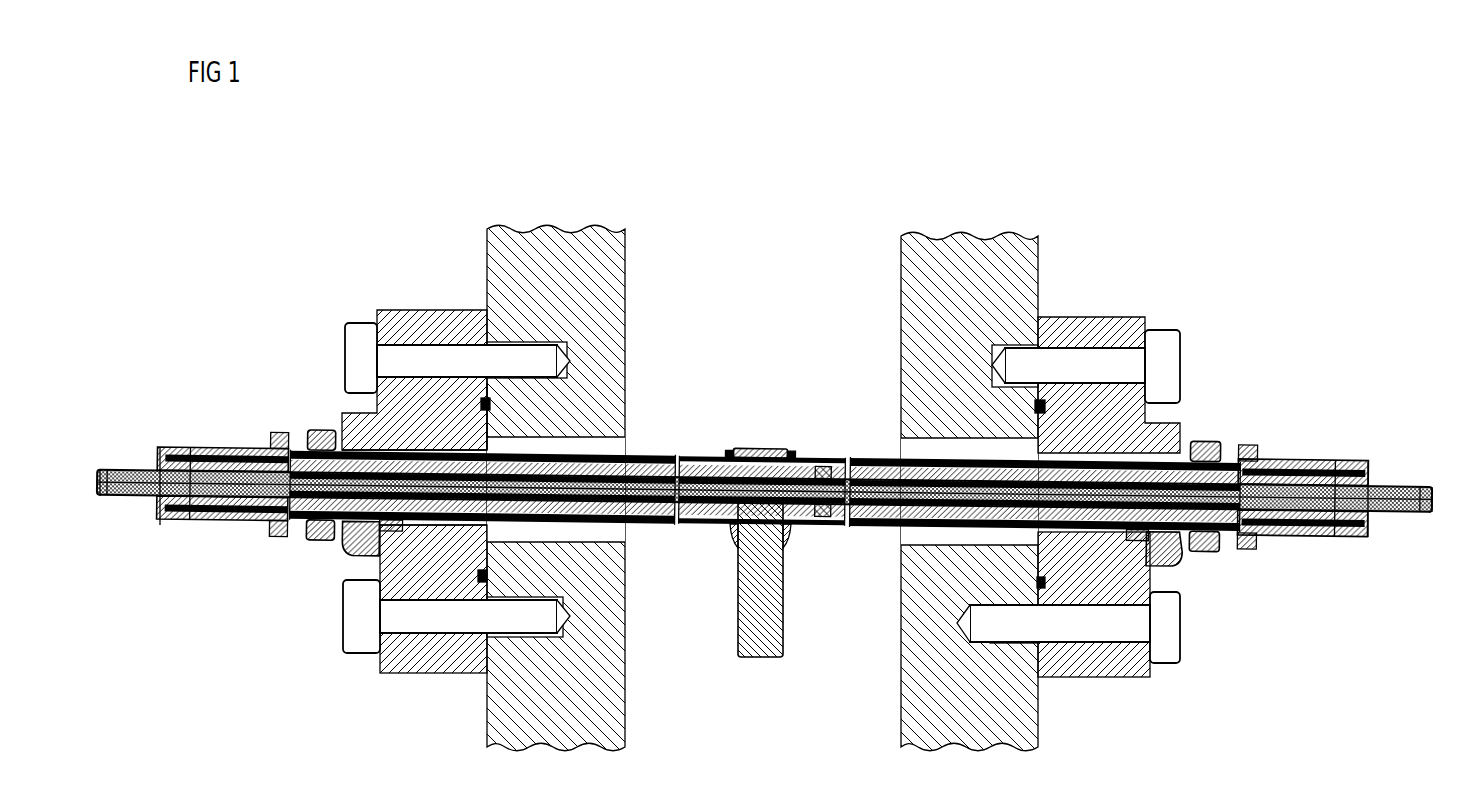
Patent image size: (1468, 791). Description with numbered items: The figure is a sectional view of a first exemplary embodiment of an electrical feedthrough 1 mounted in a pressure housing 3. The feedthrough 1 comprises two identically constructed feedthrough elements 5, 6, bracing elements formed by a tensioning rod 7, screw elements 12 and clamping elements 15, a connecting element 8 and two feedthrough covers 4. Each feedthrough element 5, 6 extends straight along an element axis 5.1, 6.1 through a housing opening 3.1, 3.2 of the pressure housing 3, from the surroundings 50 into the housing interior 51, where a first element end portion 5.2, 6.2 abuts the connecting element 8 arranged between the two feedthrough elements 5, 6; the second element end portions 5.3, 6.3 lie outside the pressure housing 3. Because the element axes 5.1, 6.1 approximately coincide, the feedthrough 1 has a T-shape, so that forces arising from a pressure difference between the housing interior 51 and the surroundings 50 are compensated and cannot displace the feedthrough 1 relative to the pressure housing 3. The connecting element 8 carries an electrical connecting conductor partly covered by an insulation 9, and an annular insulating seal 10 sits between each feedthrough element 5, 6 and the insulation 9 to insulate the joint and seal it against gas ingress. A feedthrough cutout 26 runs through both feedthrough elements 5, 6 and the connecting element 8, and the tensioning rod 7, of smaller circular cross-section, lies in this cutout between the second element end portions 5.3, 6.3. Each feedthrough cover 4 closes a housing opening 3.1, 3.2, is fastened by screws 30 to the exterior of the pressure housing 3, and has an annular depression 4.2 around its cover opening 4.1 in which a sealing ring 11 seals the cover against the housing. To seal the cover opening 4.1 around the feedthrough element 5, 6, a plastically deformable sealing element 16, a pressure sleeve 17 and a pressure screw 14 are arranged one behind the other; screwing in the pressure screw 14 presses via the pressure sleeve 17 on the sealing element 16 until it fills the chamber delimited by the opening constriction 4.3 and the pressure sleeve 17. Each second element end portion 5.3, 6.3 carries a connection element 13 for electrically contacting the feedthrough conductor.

The electrical feedthrough 1 is at (690, 258).
The pressure housing 3 is at (762, 459).
The housing opening 3.1 is at (630, 450).
The housing opening 3.2 is at (900, 452).
The feedthrough cover 4 is at (761, 458).
The cover opening 4.1 is at (518, 450).
The annular depression 4.2 is at (485, 408).
The opening constriction 4.3 is at (423, 522).
The feedthrough element 5 is at (630, 520).
The element axis 5.1 is at (106, 478).
The first element end portion 5.2 is at (728, 533).
The second element end portion 5.3 is at (168, 528).
The feedthrough element 6 is at (883, 525).
The element axis 6.1 is at (1448, 497).
The first element end portion 6.2 is at (796, 533).
The second element end portion 6.3 is at (1362, 545).
The tensioning rod 7 is at (692, 488).
The connecting element 8 is at (757, 658).
The insulation 9 is at (760, 453).
The insulating seal 10 is at (783, 453).
The sealing ring 11 is at (1035, 405).
The screw element 12 is at (1400, 487).
The connection element 13 is at (1345, 461).
The pressure screw 14 is at (1210, 440).
The clamping element 15 is at (1330, 535).
The sealing element 16 is at (1127, 540).
The pressure sleeve 17 is at (1153, 547).
The feedthrough cutout 26 is at (823, 478).
The screw 30 is at (346, 338).
The surroundings 50 is at (246, 224).
The housing interior 51 is at (778, 228).